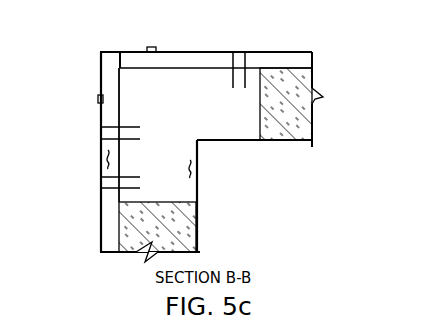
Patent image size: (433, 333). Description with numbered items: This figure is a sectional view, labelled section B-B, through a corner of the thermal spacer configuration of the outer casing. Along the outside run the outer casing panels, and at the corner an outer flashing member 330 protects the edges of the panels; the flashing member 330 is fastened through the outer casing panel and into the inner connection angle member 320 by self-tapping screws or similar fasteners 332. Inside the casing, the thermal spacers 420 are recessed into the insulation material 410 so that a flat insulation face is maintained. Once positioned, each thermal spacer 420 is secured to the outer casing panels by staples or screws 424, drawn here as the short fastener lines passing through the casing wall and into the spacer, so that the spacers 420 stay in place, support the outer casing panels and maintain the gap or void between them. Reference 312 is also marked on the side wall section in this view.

The inner connection angle member 320 is at (124, 60).
The self-tapping screw 332 is at (151, 47).
The outer flashing member 330 is at (100, 53).
The side wall panel 312 is at (100, 158).
The staple or screw 424 is at (110, 127).
The thermal spacer 420 is at (197, 168).
The insulation material 410 is at (190, 236).